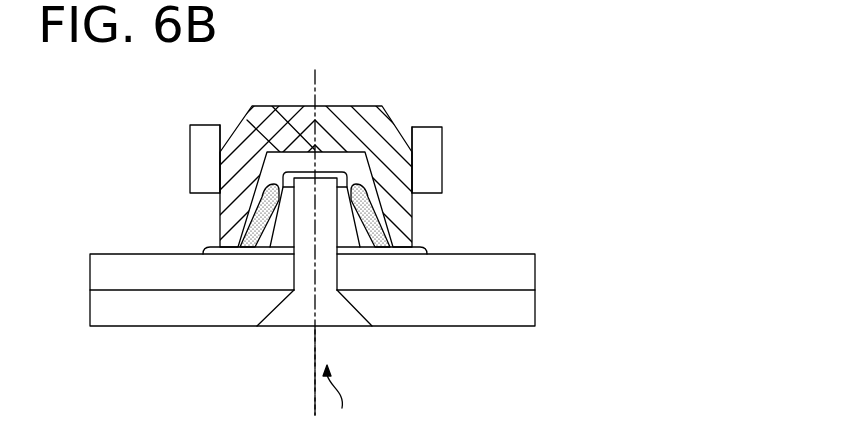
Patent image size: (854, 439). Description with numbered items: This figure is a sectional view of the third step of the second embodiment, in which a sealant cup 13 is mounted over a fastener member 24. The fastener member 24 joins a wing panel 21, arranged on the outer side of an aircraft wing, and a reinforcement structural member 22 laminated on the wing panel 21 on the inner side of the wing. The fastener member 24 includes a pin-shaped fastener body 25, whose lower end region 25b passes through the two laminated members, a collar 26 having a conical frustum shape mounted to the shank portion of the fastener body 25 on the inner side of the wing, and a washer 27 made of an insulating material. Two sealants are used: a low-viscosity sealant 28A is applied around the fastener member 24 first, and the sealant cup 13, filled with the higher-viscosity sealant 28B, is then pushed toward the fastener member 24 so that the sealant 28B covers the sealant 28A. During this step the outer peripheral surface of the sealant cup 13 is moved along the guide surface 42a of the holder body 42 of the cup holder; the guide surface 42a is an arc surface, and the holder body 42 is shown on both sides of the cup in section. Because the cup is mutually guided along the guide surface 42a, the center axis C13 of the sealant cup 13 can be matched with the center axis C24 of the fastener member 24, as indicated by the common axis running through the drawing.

The sealant cup 13 is at (352, 105).
The center axis of the sealant cup C13 is at (320, 82).
The holder body 42 is at (190, 148).
The guide surface 42a is at (230, 135).
The reinforcement structural member 22 is at (495, 253).
The wing panel 21 is at (485, 327).
The fastener body 25 is at (348, 327).
The flared portion of pin 25b is at (283, 327).
The collar 26 is at (378, 222).
The washer 27 is at (395, 247).
The sealant 28A is at (241, 245).
The sealant 28B is at (252, 212).
The center axis of the fastener member C24 is at (314, 408).
The fastener member 24 is at (338, 401).